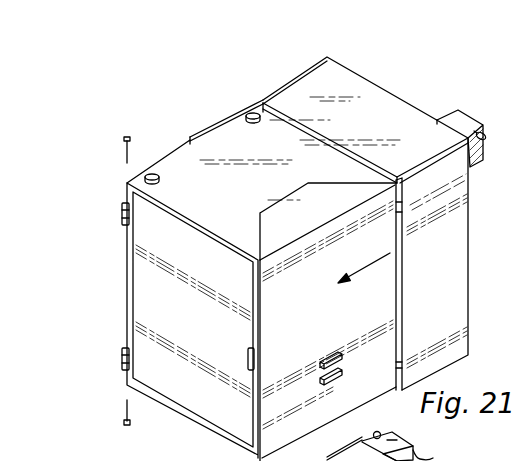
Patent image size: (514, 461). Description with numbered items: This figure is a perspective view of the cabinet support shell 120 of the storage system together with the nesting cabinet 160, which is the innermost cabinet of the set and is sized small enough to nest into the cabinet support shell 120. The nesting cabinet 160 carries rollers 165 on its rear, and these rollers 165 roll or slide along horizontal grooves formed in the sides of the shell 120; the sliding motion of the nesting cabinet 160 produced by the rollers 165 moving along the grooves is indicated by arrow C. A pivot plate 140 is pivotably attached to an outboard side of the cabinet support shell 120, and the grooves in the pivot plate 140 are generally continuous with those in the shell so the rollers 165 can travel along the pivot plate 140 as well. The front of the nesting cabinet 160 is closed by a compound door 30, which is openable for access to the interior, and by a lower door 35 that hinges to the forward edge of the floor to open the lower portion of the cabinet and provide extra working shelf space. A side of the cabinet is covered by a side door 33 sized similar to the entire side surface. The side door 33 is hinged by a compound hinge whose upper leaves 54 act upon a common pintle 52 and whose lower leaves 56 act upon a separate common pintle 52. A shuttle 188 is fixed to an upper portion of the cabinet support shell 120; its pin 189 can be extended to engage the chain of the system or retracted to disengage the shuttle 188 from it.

The nesting cabinet 160 is at (175, 138).
The pivot plate 140 is at (242, 110).
The cabinet support shell 120 is at (297, 77).
The roller 165 is at (258, 121).
The pintle 52 is at (129, 150).
The side door 33 is at (199, 320).
The upper leaf 54 is at (129, 216).
The lower leaf 56 is at (129, 355).
The compound door 30 is at (312, 292).
The lower door 35 is at (314, 430).
The shuttle 188 is at (463, 112).
The pin 189 is at (499, 109).
The arrow C is at (350, 279).